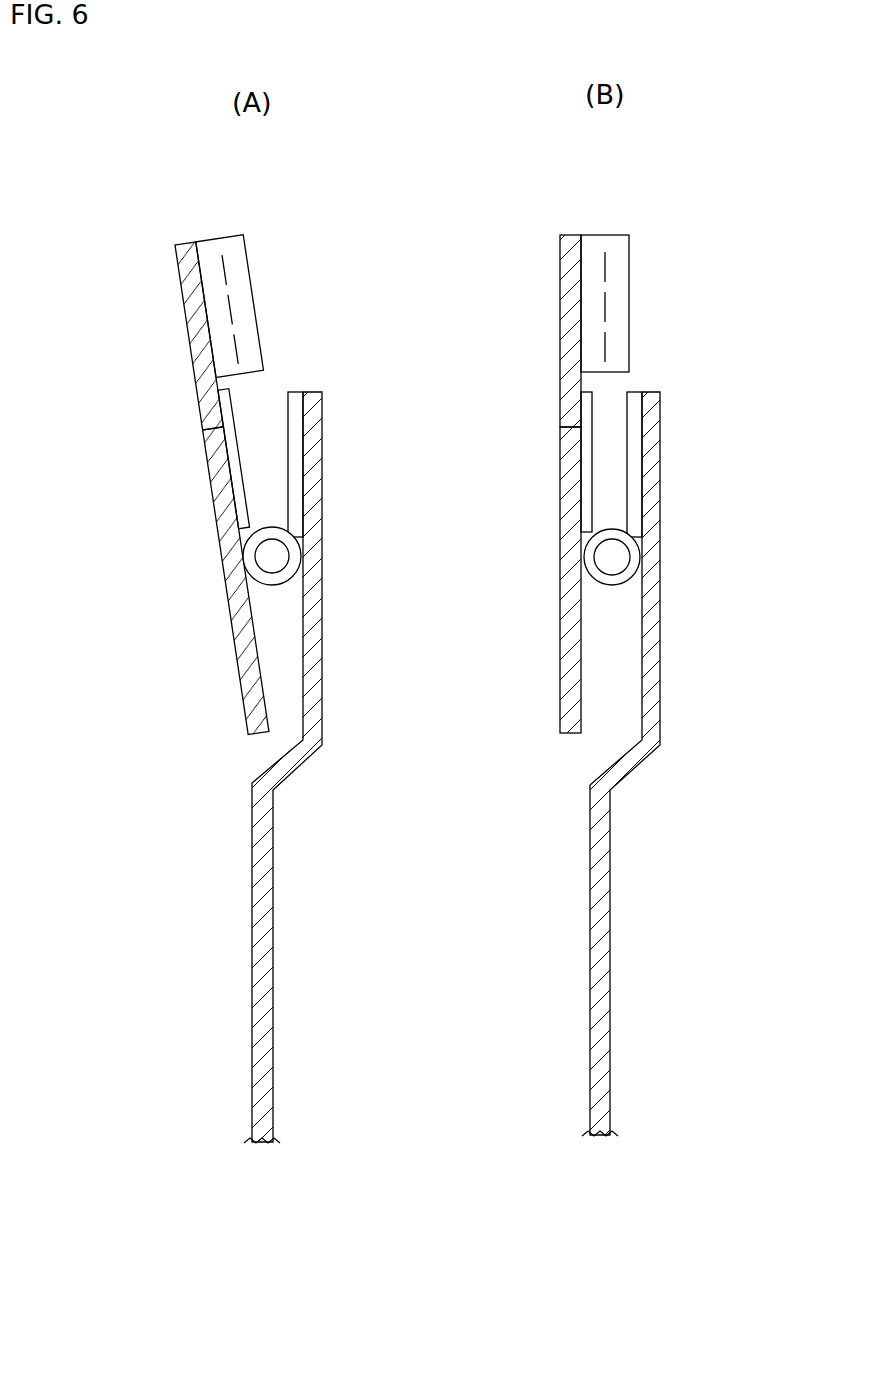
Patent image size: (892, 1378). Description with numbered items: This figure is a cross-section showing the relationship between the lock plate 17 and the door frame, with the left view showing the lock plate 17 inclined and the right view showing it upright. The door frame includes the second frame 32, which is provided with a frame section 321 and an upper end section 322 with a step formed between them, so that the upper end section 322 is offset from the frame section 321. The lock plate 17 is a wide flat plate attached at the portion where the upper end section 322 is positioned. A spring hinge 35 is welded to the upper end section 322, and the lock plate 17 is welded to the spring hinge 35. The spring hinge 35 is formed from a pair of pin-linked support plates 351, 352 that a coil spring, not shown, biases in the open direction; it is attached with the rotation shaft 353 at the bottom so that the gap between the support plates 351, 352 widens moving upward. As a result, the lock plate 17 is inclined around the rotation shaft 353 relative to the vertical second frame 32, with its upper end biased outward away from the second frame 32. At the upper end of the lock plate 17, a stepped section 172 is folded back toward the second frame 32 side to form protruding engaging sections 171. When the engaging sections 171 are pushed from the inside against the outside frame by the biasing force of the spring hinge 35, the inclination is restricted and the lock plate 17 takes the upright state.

The lock plate 17 is at (190, 340).
The engaging section 171 is at (258, 318).
The stepped section 172 is at (230, 236).
The second frame 32 is at (508, 811).
The frame section 321 is at (276, 922).
The upper end section 322 is at (326, 678).
The spring hinge 35 is at (273, 598).
The support plate 351 is at (325, 478).
The support plate 352 is at (222, 492).
The rotation shaft 353 is at (268, 556).